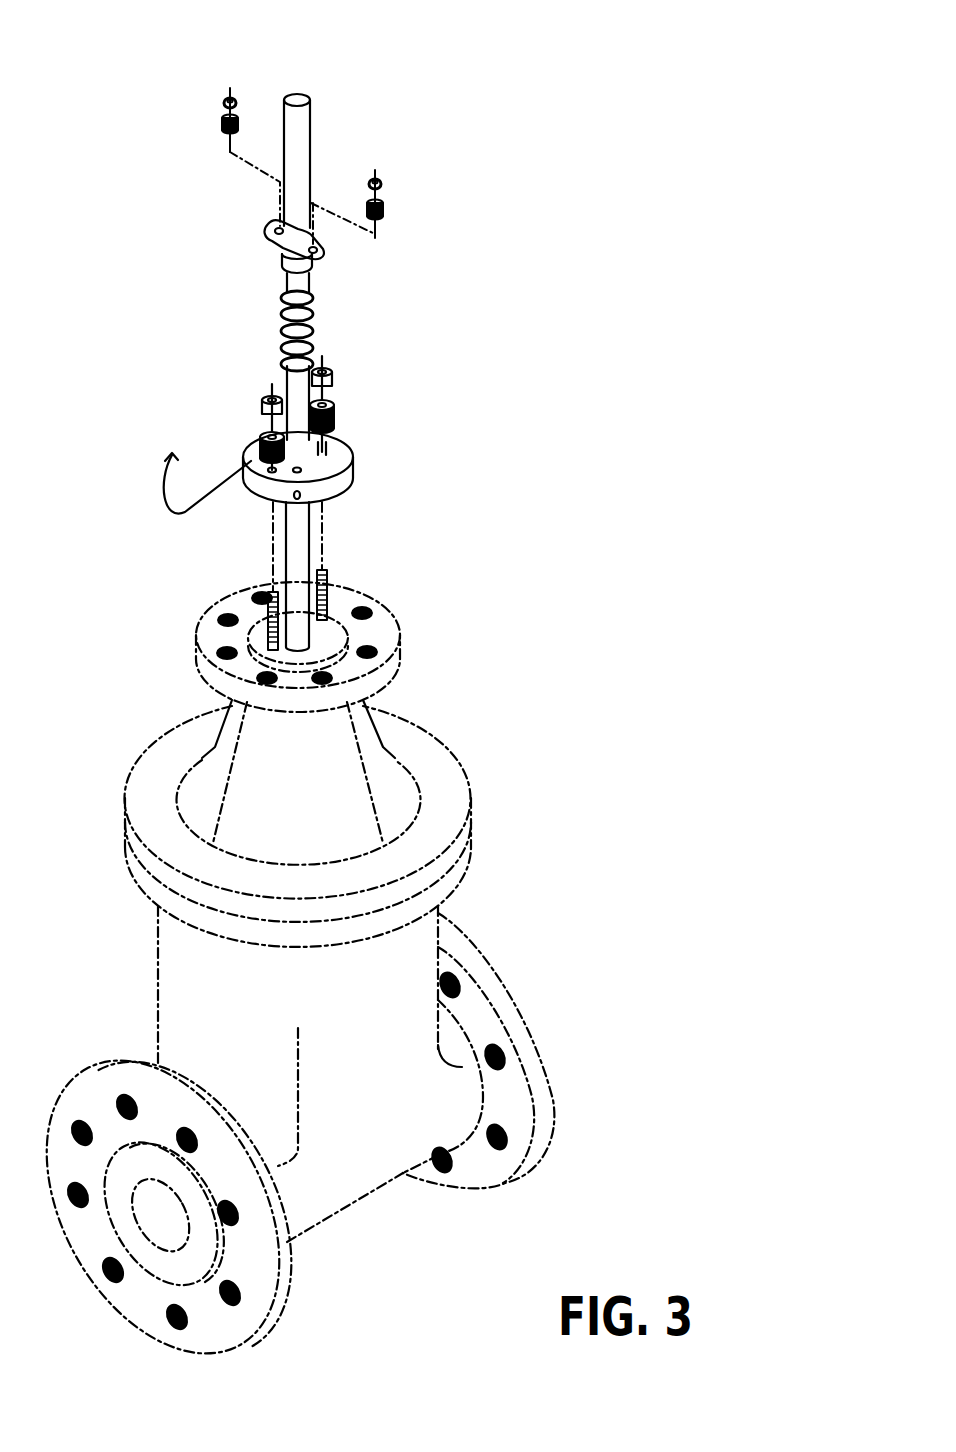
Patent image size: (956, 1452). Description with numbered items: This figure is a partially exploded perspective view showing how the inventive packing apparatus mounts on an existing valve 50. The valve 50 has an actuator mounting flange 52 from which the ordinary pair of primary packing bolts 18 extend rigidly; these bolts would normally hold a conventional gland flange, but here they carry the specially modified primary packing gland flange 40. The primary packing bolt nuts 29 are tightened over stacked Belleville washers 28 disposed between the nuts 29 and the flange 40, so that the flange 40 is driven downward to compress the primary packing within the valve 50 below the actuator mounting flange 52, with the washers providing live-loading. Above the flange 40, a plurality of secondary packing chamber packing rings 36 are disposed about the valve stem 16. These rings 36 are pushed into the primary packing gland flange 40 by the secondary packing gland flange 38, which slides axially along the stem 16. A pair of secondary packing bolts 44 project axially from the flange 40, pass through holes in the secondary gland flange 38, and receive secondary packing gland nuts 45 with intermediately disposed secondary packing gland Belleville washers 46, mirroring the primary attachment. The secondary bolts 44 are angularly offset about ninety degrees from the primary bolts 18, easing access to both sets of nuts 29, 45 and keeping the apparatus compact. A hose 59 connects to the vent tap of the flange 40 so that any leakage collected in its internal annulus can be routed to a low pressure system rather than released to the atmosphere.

The valve stem 16 is at (303, 137).
The secondary packing gland nuts 45 is at (222, 105).
The secondary packing gland Belleville washers 46 is at (228, 130).
The secondary packing gland flange 38 is at (320, 253).
The secondary packing chamber packing rings 36 is at (313, 363).
The primary packing bolt nuts 29 is at (333, 371).
The Belleville washers 28 is at (336, 404).
The primary packing gland flange 40 is at (351, 456).
The secondary packing bolts 44 is at (323, 452).
The hose 59 is at (176, 511).
The primary packing bolts 18 is at (331, 578).
The actuator mounting flange 52 is at (402, 633).
The existing valve 50 is at (458, 842).